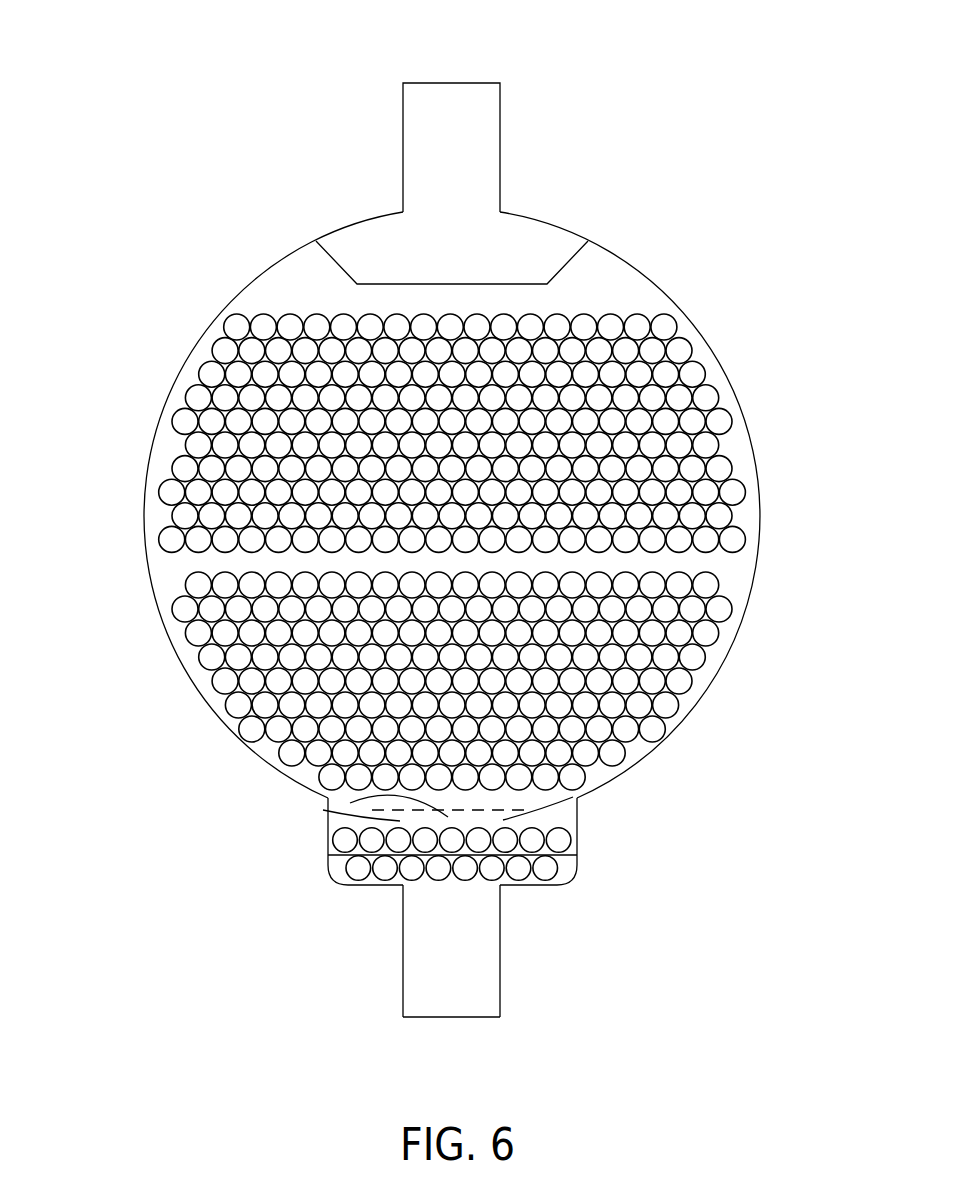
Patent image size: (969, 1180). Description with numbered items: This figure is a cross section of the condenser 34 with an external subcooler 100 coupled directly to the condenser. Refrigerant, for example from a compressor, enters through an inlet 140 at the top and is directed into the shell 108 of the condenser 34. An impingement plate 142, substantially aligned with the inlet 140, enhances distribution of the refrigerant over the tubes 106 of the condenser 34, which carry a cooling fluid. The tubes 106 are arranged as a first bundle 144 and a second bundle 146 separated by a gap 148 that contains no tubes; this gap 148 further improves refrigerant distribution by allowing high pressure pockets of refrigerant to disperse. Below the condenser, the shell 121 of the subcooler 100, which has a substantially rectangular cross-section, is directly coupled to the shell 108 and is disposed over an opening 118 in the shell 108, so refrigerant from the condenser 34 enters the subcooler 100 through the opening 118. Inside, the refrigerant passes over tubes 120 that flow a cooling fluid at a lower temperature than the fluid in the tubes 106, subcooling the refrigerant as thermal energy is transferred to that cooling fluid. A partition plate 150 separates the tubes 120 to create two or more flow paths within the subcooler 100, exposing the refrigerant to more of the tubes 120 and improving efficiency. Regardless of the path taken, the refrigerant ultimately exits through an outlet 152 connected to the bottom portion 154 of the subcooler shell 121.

The condenser 34 is at (134, 384).
The external subcooler 100 is at (590, 838).
The tubes 106 is at (663, 328).
The shell 108 is at (145, 517).
The opening 118 is at (350, 803).
The tubes 120 is at (357, 872).
The shell 121 is at (378, 887).
The inlet 140 is at (478, 83).
The impingement plate 142 is at (517, 284).
The first bundle 144 is at (757, 374).
The second bundle 146 is at (713, 728).
The gap 148 is at (702, 567).
The partition plate 150 is at (567, 858).
The outlet 152 is at (452, 1018).
The bottom portion 154 is at (519, 938).